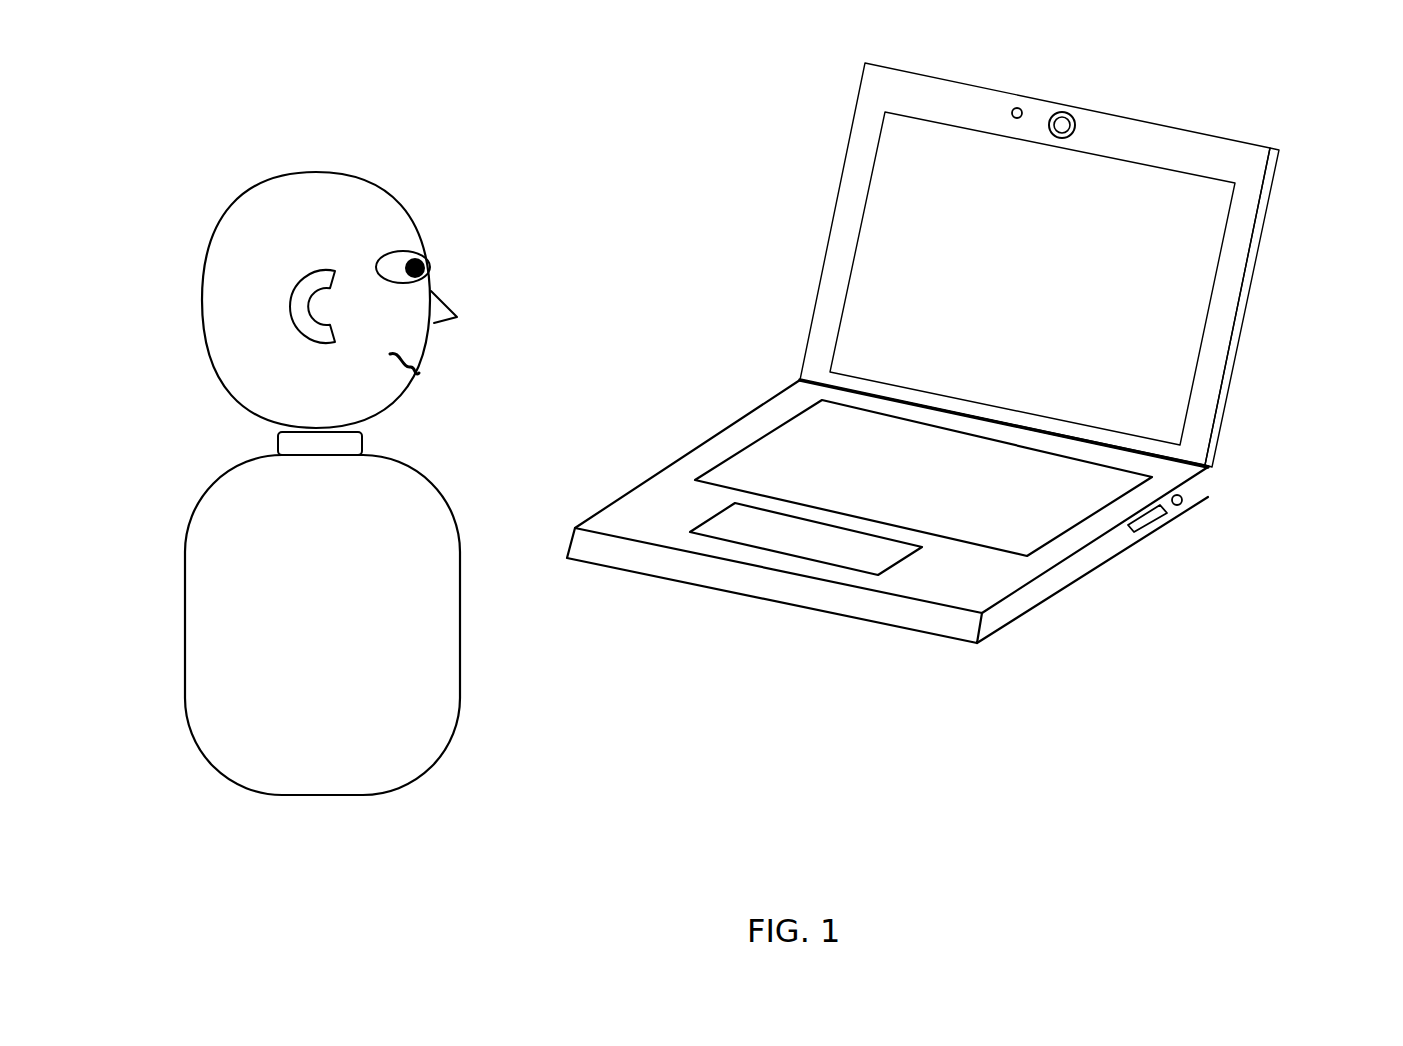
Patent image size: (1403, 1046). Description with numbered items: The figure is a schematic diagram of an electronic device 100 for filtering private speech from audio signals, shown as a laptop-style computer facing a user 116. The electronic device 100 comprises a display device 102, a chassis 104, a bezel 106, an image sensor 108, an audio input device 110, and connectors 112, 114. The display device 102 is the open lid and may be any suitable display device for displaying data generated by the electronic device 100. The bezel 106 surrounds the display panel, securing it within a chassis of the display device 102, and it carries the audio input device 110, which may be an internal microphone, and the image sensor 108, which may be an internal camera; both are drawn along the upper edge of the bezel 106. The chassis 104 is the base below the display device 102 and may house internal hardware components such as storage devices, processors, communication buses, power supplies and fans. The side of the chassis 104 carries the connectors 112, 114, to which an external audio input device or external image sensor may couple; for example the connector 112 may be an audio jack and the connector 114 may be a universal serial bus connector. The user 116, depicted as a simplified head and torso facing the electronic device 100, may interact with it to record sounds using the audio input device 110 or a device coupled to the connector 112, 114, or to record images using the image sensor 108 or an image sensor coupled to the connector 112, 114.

The electronic device 100 is at (760, 122).
The display device 102 is at (1045, 261).
The chassis 104 is at (932, 504).
The bezel 106 is at (1253, 216).
The image sensor 108 is at (1075, 122).
The audio input device 110 is at (1022, 113).
The connector 112 is at (1183, 500).
The connector 114 is at (1150, 520).
The user 116 is at (299, 140).